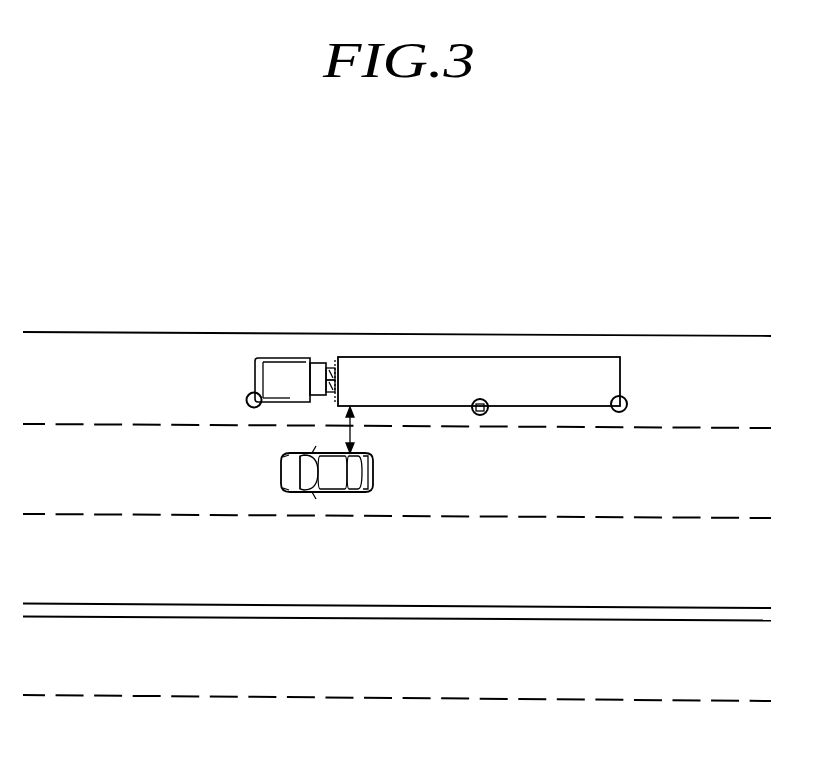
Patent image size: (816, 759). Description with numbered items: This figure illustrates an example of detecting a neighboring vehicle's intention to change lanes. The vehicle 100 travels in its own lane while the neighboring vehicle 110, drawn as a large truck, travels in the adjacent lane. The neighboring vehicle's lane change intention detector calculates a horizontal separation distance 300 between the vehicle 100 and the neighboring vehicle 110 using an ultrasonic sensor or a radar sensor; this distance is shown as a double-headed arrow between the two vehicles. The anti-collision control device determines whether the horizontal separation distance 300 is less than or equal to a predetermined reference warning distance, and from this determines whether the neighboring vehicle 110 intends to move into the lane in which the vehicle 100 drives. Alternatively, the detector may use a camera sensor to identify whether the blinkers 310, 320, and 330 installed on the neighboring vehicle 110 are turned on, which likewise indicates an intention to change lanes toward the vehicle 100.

The vehicle 100 is at (321, 452).
The neighboring vehicle 110 is at (417, 356).
The horizontal separation distance 300 is at (356, 433).
The blinker 310 is at (246, 400).
The blinker 320 is at (483, 401).
The blinker 330 is at (627, 404).